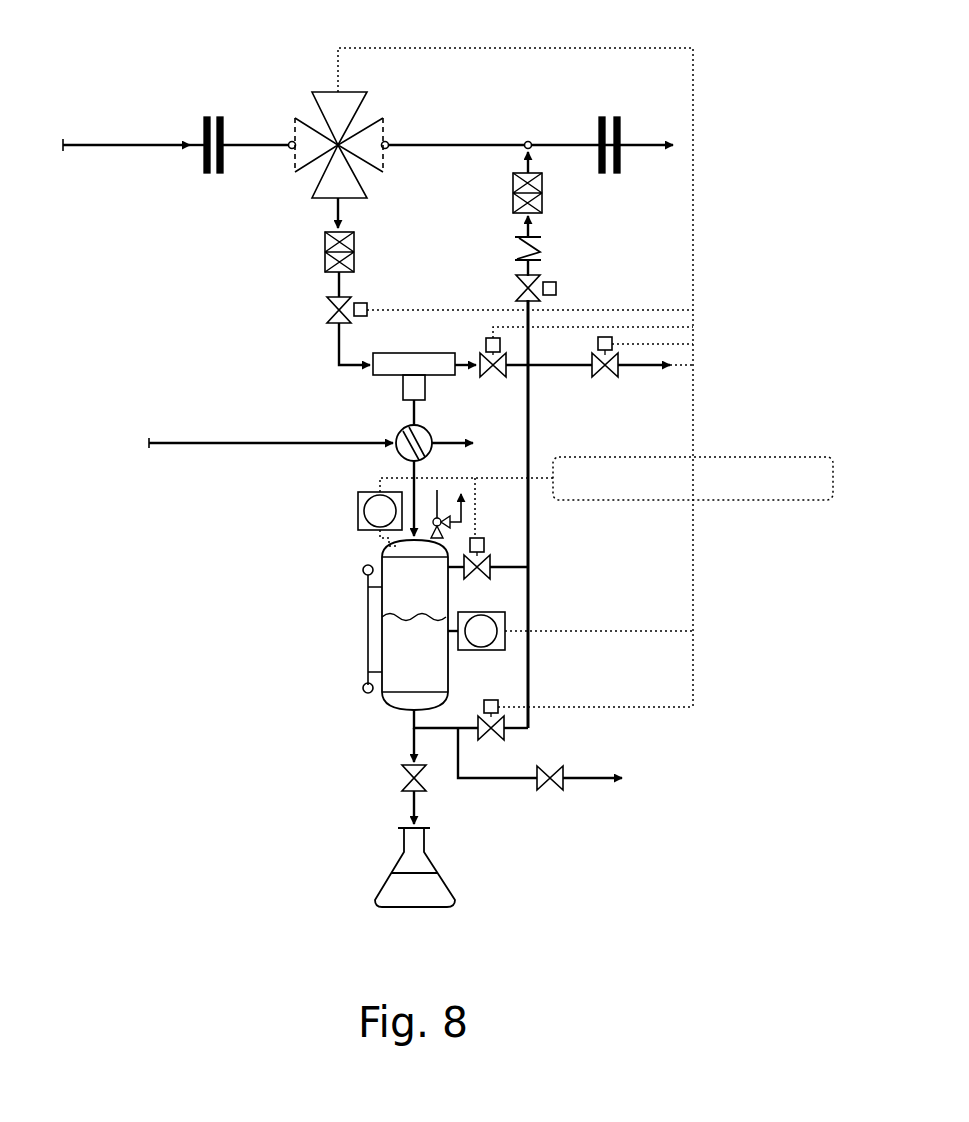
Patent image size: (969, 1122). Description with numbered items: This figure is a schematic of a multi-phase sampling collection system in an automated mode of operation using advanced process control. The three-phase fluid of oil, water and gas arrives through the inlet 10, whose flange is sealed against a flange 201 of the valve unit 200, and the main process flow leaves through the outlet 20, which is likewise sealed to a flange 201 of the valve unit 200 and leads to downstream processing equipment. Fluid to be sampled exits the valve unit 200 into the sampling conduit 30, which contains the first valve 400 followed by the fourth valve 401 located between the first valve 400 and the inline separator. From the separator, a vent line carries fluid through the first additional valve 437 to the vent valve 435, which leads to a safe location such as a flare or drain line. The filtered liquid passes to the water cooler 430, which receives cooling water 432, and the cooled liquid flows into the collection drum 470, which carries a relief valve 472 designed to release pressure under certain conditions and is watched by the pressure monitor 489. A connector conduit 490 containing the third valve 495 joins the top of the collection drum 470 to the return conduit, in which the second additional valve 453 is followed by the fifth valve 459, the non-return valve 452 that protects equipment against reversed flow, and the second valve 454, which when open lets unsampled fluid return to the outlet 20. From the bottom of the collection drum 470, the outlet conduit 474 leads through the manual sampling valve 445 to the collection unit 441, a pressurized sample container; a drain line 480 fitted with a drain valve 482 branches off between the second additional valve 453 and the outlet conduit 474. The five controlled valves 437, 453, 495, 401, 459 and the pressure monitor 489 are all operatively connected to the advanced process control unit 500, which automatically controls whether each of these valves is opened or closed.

The inlet 10 is at (112, 145).
The flange 201 is at (213, 108).
The valve unit 200 is at (324, 90).
The outlet 20 is at (642, 143).
The first valve 400 is at (325, 243).
The valve (V4) 401 is at (327, 305).
The sampling conduit 30 is at (336, 350).
The valve (V1) 437 is at (478, 372).
The vent valve 435 is at (602, 372).
The advanced process control unit 500 is at (728, 457).
The valve (V5) 459 is at (516, 283).
The non-return valve 452 is at (545, 248).
The second valve 454 is at (545, 190).
The cooling water 432 is at (205, 426).
The water cooler 430 is at (400, 455).
The relief valve 472 is at (450, 500).
The pressure monitor (PC) 489 is at (357, 520).
The collection drum 470 is at (397, 673).
The valve (V3) 495 is at (492, 565).
The connector conduit 490 is at (502, 570).
The outlet conduit 474 is at (406, 717).
The valve (V2) 453 is at (505, 735).
The drain valve 482 is at (575, 772).
The drain line 480 is at (575, 785).
The manual sampling valve 445 is at (405, 776).
The collection unit 441 is at (376, 887).